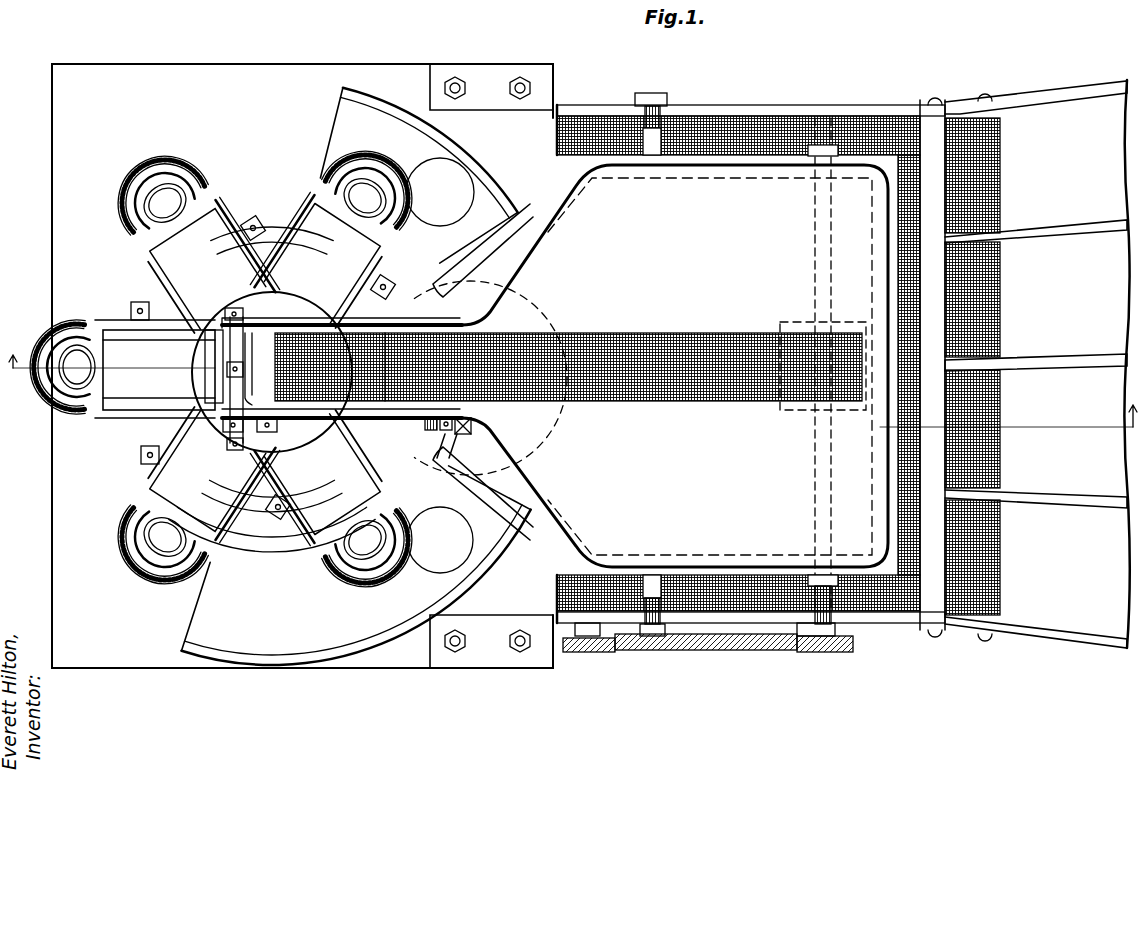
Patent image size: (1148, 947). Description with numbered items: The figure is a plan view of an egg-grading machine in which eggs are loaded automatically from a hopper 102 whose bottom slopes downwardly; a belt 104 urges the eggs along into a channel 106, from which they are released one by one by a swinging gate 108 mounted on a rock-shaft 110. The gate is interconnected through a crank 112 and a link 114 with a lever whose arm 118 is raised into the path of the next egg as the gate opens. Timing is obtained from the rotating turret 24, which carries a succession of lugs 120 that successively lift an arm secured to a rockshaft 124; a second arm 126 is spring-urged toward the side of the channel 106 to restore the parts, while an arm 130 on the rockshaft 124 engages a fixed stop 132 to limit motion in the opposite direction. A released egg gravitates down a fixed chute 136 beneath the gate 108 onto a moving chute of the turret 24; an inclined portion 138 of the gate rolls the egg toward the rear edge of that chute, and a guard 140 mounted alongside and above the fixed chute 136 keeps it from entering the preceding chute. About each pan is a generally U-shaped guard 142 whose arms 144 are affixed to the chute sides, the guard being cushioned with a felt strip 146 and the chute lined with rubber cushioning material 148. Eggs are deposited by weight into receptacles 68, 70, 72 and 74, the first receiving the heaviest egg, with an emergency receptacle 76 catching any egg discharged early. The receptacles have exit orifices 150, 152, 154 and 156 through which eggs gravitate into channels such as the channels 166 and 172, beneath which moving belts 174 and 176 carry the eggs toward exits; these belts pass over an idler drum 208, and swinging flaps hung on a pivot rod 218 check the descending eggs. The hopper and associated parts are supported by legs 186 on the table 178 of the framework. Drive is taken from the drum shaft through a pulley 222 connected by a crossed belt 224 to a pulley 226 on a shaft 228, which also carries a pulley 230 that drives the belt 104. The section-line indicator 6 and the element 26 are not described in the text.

The section line 6- 6 is at (571, 391).
The rotating turret 24 is at (126, 447).
The pad eye 26 is at (190, 192).
The receptacle 68 is at (412, 590).
The receptacle 70 is at (470, 472).
The receptacle 72 is at (465, 263).
The receptacle 74 is at (358, 120).
The emergency receptacle 76 is at (200, 628).
The hopper 102 is at (708, 160).
The belt 104 is at (714, 336).
The channel 106 is at (342, 302).
The swinging gate 108 is at (252, 325).
The rock-shaft 110 is at (210, 366).
The crank 112 is at (242, 451).
The link 114 is at (246, 472).
The arm 118 is at (281, 340).
The lugs 120 is at (262, 228).
The rockshaft 124 is at (331, 424).
The second arm 126 is at (430, 438).
The arm 130 is at (472, 436).
The fixed stop 132 is at (482, 426).
The fixed chute 136 is at (205, 346).
The inclined portion 138 is at (205, 392).
The guard 140 is at (218, 422).
The guard 142 is at (200, 172).
The arms 144 is at (150, 256).
The strip 146 is at (178, 162).
The cushioning material 148 is at (214, 224).
The exit orifice 150 is at (450, 550).
The exit orifice 152 is at (492, 457).
The exit orifice 154 is at (497, 286).
The exit orifice 156 is at (425, 168).
The channel 166 is at (770, 606).
The channel 172 is at (775, 118).
The belt 174 is at (985, 411).
The belt 176 is at (1000, 300).
The table 178 is at (141, 656).
The legs 186 is at (496, 77).
The idler drum 208 is at (1000, 358).
The pivot rod 218 is at (640, 110).
The pulley 222 is at (606, 652).
The crossed belt 224 is at (731, 650).
The pulley 226 is at (836, 652).
The shaft 228 is at (850, 620).
The pulley 230 is at (796, 320).